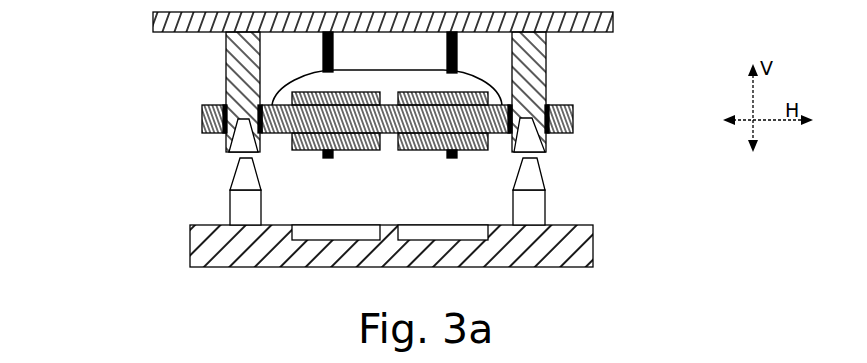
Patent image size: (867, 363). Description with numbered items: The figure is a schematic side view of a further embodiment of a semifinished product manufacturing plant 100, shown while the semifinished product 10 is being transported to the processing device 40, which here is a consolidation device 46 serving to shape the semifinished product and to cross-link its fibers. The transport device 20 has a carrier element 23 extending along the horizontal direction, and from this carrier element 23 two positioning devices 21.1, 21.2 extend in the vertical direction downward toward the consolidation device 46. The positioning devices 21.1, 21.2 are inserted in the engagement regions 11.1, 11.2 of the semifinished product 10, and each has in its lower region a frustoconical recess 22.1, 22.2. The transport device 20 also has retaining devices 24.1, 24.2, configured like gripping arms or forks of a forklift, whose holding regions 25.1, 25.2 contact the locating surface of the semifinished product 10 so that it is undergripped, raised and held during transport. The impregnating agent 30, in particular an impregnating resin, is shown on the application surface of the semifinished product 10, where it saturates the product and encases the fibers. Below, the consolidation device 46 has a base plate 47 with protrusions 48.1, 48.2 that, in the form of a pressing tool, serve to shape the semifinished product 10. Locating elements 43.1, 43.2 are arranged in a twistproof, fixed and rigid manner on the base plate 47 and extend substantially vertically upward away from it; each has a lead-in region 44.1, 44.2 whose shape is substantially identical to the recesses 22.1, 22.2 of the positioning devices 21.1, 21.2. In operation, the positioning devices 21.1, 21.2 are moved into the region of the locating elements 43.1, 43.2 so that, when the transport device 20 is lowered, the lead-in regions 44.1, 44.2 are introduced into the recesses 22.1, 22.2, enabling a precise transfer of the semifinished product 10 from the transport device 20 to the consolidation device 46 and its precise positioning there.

The semifinished product manufacturing plant 100 is at (113, 118).
The transport device 20 is at (133, 50).
The carrier element 23 is at (613, 21).
The positioning device 21.1 is at (578, 96).
The positioning device 21.2 is at (197, 94).
The recess 22.1 is at (534, 143).
The recess 22.2 is at (240, 143).
The retaining device 24.1 is at (451, 62).
The retaining device 24.2 is at (323, 42).
The impregnating agent 30 is at (383, 72).
The semifinished product 10 is at (408, 130).
The engagement region 11.1 is at (548, 105).
The engagement region 11.2 is at (225, 110).
The holding region 25.1 is at (452, 159).
The holding region 25.2 is at (328, 158).
The processing device 40 is at (370, 214).
The consolidation device 46 is at (176, 226).
The base plate 47 is at (422, 229).
The protrusion 48.1 is at (418, 230).
The protrusion 48.2 is at (303, 230).
The locating element 43.1 is at (538, 208).
The locating element 43.2 is at (233, 208).
The lead-in region 44.1 is at (533, 172).
The lead-in region 44.2 is at (238, 172).